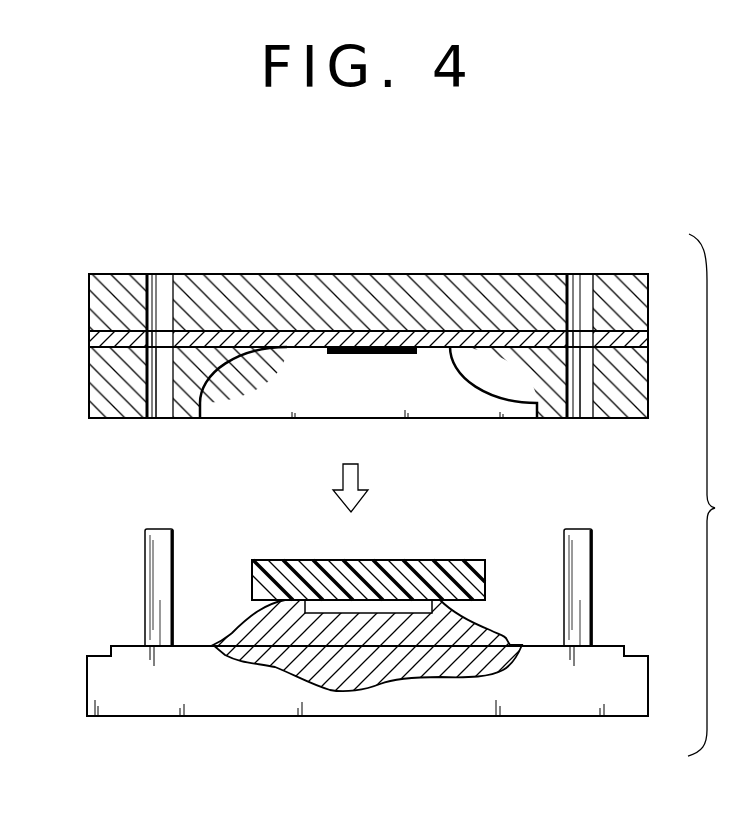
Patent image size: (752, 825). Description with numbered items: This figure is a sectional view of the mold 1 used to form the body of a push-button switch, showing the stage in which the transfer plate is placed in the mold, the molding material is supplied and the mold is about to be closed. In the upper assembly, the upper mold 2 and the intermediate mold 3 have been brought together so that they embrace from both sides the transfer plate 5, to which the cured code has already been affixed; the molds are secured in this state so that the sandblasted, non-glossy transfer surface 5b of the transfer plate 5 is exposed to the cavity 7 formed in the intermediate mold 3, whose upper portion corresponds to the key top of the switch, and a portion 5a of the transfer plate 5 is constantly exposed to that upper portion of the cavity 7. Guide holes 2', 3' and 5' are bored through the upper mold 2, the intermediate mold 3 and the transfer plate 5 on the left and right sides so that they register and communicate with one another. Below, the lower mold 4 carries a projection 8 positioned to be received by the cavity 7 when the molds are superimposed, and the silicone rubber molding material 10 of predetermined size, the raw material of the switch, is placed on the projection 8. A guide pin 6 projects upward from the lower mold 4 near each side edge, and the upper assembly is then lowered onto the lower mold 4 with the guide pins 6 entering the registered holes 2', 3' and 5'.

The mold 1 is at (506, 259).
The upper mold 2 is at (368, 280).
The guide hole 2' is at (392, 322).
The intermediate mold 3 is at (345, 383).
The guide hole 3' is at (422, 406).
The transfer plate 5 is at (346, 344).
The guide hole 5' is at (421, 291).
The portion of the transfer plate 5a is at (415, 350).
The transfer surface 5b is at (313, 350).
The cavity 7 is at (484, 400).
The silicone rubber molding material 10 is at (459, 567).
The projection 8 is at (478, 622).
The lower mold 4 is at (183, 707).
The guide pin 6 is at (150, 568).